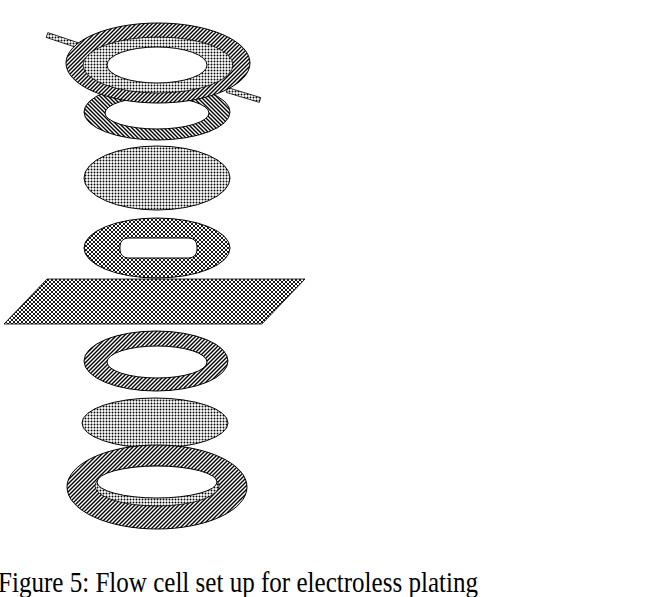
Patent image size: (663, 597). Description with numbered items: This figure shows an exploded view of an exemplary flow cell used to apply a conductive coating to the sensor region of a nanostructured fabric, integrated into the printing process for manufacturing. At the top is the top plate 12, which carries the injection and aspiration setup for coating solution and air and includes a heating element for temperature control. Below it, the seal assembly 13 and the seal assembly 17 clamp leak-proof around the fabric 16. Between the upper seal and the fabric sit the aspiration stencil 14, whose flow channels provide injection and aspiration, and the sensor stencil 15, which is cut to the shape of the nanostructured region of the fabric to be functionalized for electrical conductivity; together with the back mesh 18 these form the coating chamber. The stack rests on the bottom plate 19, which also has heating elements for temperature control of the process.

The top plate 12 is at (242, 45).
The seal assembly 13 is at (240, 97).
The aspiration stencil 14 is at (215, 176).
The sensor stencil 15 is at (220, 233).
The fabric 16 is at (212, 298).
The seal assembly 17 is at (208, 355).
The back mesh 18 is at (213, 420).
The bottom plate 19 is at (238, 487).